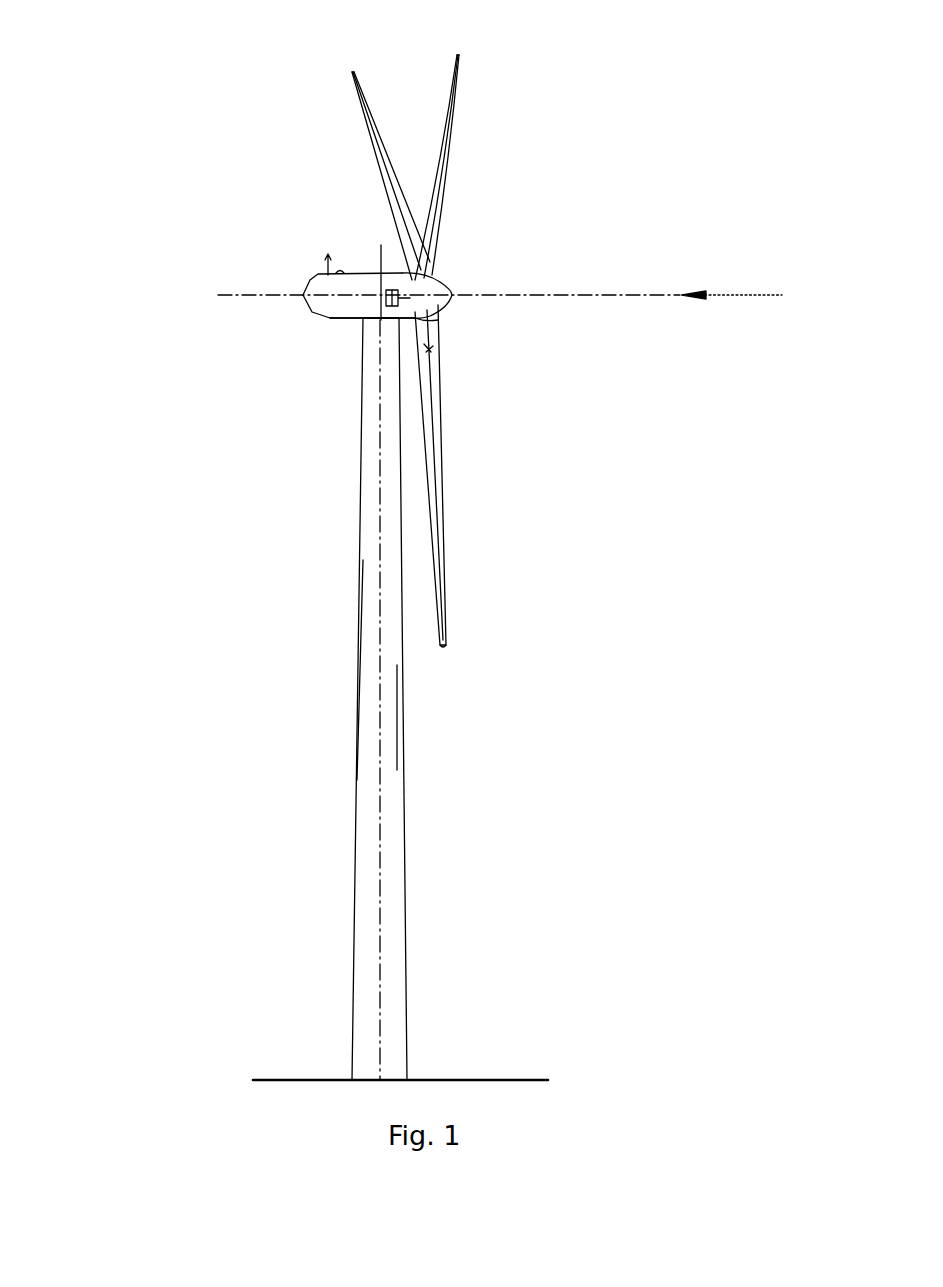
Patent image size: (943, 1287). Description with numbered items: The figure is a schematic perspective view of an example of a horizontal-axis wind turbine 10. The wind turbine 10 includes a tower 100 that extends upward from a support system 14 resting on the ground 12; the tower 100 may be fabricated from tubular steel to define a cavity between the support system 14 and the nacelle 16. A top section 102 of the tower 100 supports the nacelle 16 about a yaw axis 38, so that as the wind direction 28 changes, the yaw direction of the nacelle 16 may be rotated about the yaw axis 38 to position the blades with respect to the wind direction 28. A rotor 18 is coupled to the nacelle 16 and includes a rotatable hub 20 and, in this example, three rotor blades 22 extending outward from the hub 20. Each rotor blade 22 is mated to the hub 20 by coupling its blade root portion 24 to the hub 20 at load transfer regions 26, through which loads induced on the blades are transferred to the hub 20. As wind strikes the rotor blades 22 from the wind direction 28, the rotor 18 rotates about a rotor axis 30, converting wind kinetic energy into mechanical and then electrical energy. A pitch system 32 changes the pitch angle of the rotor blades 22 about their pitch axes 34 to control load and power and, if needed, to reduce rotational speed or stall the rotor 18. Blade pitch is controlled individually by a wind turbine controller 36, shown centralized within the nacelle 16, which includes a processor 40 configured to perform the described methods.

The wind turbine 10 is at (134, 74).
The ground 12 is at (276, 1080).
The support system 14 is at (343, 1080).
The nacelle 16 is at (335, 318).
The rotor 18 is at (437, 345).
The rotatable hub 20 is at (450, 291).
The rotor blade 22 is at (407, 345).
The blade root portion 24 is at (445, 400).
The load transfer regions 26 is at (438, 320).
The wind direction 28 is at (750, 293).
The rotor axis 30 is at (518, 300).
The pitch system 32 is at (442, 350).
The pitch axes 34 is at (350, 76).
The wind turbine controller 36 is at (370, 347).
The yaw axis 38 is at (383, 733).
The processor 40 is at (383, 247).
The tower 100 is at (372, 673).
The top section 102 is at (363, 320).